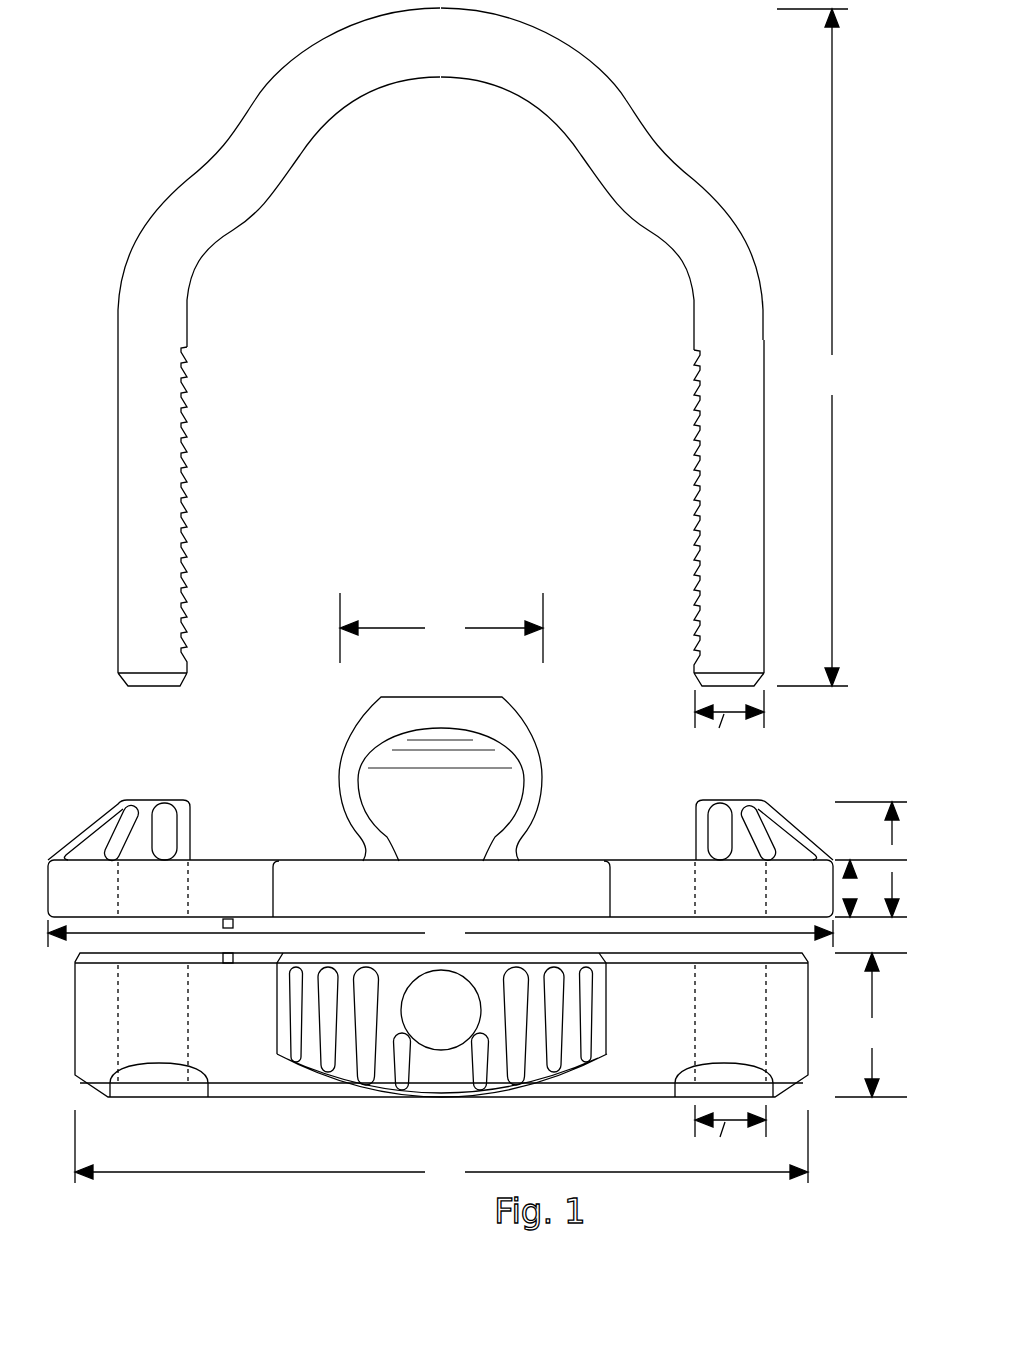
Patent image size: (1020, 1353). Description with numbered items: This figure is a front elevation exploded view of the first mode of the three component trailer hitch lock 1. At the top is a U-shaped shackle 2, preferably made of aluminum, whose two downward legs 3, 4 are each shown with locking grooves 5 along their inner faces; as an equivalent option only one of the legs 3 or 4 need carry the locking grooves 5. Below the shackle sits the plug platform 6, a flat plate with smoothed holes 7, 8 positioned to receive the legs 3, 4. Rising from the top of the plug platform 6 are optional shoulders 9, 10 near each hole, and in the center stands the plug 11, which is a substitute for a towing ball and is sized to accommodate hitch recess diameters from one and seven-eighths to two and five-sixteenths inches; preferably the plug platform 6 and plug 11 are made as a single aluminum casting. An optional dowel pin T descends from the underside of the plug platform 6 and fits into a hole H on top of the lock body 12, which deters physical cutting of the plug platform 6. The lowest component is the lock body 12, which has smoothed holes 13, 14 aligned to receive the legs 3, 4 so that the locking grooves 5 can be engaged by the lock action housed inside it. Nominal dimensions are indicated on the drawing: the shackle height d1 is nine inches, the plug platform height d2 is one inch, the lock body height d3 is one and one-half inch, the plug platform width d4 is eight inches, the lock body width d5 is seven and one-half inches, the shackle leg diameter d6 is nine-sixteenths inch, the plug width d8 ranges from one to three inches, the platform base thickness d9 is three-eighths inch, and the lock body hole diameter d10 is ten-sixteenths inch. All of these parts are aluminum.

The three component trailer hitch lock 1 is at (503, 594).
The U-shaped shackle 2 is at (437, 347).
The leg 3 is at (127, 407).
The leg 4 is at (758, 412).
The locking grooves 5 is at (183, 428).
The plug platform 6 is at (436, 812).
The smoothed hole 7 is at (188, 875).
The smoothed hole 8 is at (697, 887).
The shoulder 9 is at (182, 810).
The shoulder 10 is at (698, 803).
The plug 11 is at (530, 727).
The lock body 12 is at (441, 1049).
The smoothed hole 13 is at (188, 1047).
The smoothed hole 14 is at (695, 1045).
The dowel pin T is at (230, 920).
The hole H is at (228, 963).
The shackle height dimension d1 is at (812, 347).
The plug platform height dimension d2 is at (871, 859).
The lock body height dimension d3 is at (871, 1025).
The plug platform width dimension d4 is at (440, 933).
The lock body width dimension d5 is at (441, 1147).
The shackle leg diameter dimension d6 is at (729, 722).
The plug width dimension d8 is at (441, 628).
The plug platform base thickness dimension d9 is at (871, 888).
The lock body hole diameter dimension d10 is at (730, 1134).